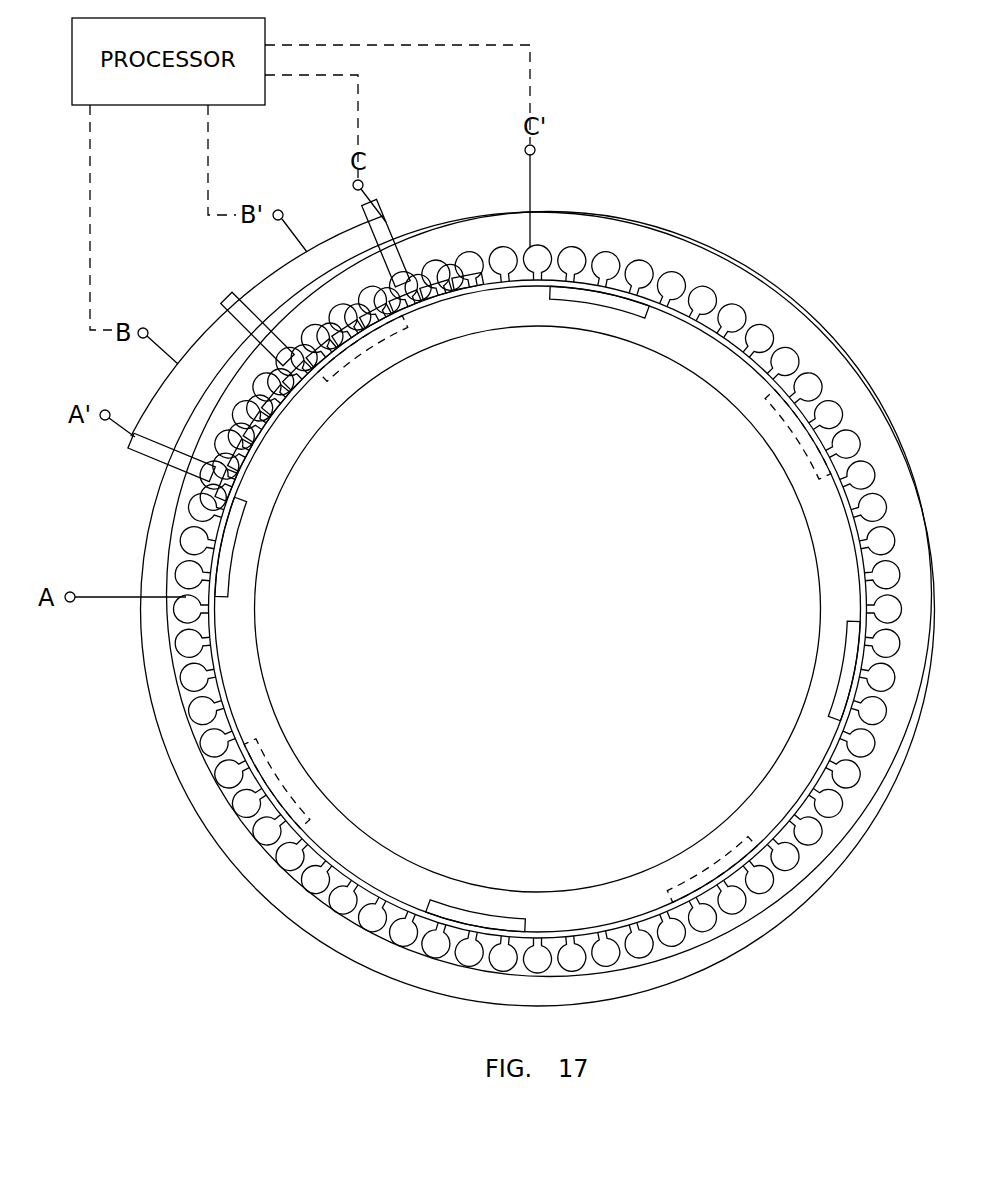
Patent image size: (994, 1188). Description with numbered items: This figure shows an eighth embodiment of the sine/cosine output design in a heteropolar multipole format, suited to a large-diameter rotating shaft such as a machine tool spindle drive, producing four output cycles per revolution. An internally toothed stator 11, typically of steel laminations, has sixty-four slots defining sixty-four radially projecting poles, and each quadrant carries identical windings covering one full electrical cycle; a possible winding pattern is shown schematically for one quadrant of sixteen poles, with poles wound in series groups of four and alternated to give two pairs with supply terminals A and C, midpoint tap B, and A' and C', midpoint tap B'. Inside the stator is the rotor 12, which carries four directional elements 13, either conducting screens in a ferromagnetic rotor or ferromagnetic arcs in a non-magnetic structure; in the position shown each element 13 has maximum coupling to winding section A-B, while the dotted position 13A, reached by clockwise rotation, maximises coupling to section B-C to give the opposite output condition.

The internally toothed stator 11 is at (690, 249).
The rotor 12 is at (292, 468).
The directional element 13 is at (602, 305).
The directional element in rotated position 13A is at (369, 350).